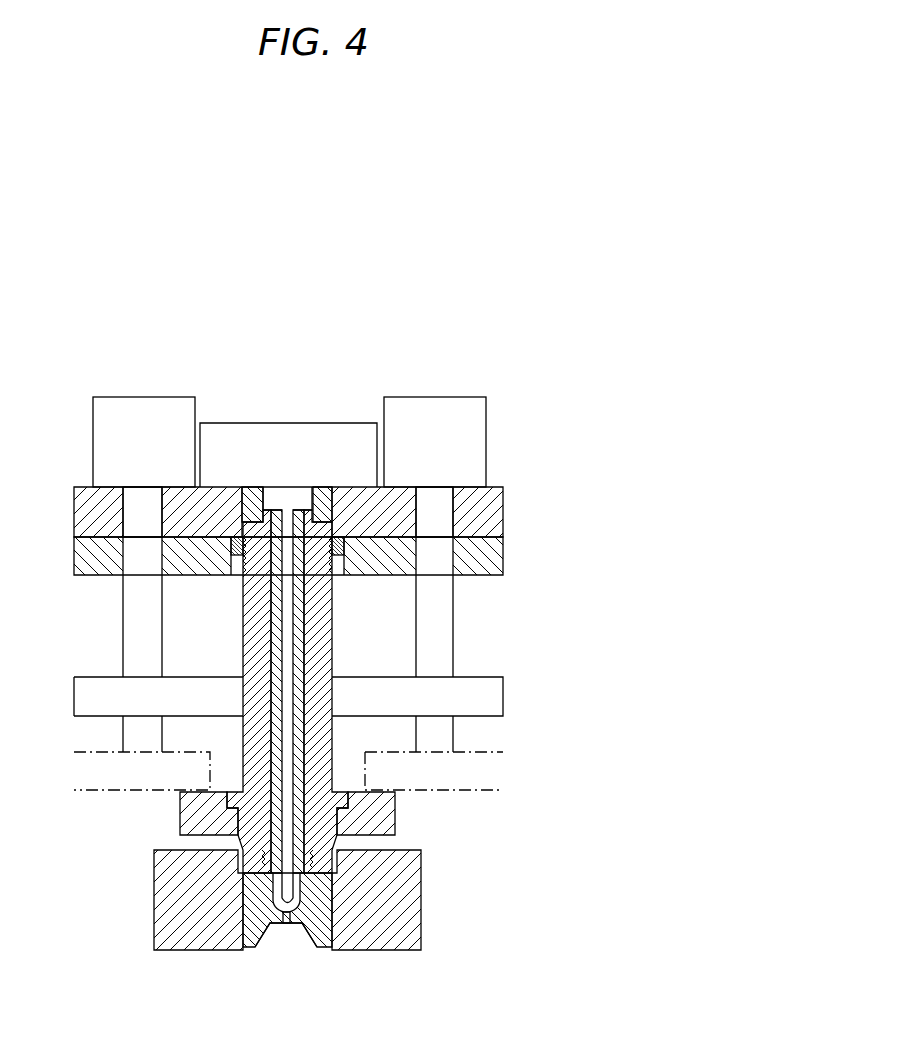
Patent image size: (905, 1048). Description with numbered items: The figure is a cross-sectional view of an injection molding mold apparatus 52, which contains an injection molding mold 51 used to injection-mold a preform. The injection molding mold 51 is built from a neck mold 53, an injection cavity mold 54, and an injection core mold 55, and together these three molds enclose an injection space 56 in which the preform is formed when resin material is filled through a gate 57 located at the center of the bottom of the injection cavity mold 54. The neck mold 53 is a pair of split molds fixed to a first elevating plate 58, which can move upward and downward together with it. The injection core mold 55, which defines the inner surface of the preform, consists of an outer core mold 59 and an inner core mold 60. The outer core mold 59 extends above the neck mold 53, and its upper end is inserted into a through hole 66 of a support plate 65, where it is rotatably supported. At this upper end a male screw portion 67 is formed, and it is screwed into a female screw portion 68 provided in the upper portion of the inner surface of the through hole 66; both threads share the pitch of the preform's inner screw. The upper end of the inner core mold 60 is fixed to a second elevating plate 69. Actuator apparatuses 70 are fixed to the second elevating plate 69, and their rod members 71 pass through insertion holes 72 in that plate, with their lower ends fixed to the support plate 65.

The injection molding mold 51 is at (420, 825).
The injection molding mold apparatus 52 is at (563, 235).
The neck mold 53 is at (317, 857).
The injection cavity mold 54 is at (250, 935).
The injection core mold 55 is at (423, 691).
The injection space 56 is at (273, 893).
The gate 57 is at (286, 925).
The first elevating plate 58 is at (193, 807).
The outer core mold 59 is at (320, 642).
The inner core mold 60 is at (298, 603).
The support plate 65 is at (90, 550).
The through hole 66 is at (245, 585).
The male screw portion 67 is at (306, 510).
The female screw portion 68 is at (342, 515).
The second elevating plate 69 is at (505, 507).
The actuator apparatus 70 is at (108, 406).
The rod member 71 is at (132, 508).
The insertion hole 72 is at (150, 490).